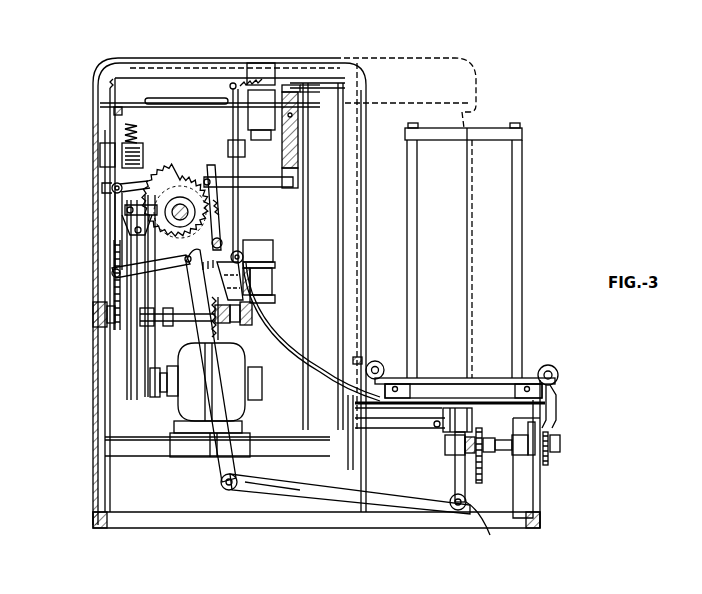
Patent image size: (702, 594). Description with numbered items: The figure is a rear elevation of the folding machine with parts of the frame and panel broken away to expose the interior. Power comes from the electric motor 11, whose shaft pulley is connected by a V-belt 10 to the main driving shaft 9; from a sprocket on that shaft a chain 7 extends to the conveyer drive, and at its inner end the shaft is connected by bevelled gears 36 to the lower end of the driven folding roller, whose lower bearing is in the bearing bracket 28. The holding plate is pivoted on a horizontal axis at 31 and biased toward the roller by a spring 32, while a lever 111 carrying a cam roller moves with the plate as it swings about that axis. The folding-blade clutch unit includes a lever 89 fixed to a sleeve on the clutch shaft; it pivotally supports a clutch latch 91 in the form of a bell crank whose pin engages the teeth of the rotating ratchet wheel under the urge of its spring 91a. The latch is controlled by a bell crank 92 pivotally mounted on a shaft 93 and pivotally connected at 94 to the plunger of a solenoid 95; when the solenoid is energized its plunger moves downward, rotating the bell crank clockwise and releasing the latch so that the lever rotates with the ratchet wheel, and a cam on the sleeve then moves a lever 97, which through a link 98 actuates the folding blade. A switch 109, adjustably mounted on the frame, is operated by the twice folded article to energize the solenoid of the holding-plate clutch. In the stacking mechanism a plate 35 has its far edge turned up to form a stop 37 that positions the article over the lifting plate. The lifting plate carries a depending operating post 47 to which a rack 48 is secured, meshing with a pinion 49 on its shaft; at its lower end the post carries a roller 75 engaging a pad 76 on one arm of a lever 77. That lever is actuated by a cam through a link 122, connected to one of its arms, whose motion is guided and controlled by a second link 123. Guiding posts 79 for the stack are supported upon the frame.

The chain 7 is at (95, 318).
The main driving shaft 9 is at (172, 322).
The V-belt 10 is at (150, 384).
The electric motor 11 is at (120, 208).
The bearing bracket 28 is at (272, 283).
The pivotal axis 31 is at (243, 257).
The spring 32 is at (245, 68).
The plate 35 is at (316, 378).
The bevelled gears 36 is at (254, 315).
The stop 37 is at (545, 400).
The operating post 47 is at (455, 485).
The rack 48 is at (480, 478).
The pinion 49 is at (480, 450).
The roller 75 is at (484, 530).
The pad 76 is at (455, 512).
The lever 77 is at (396, 512).
The guiding posts 79 is at (514, 301).
The lever 89 is at (175, 188).
The clutch latch 91 is at (117, 233).
The spring 91a is at (89, 285).
The bell crank 92 is at (119, 206).
The shaft 93 is at (112, 189).
The pivotal connection 94 is at (104, 160).
The solenoid 95 is at (140, 146).
The lever 97 is at (217, 226).
The link 98 is at (214, 178).
The switch 109 is at (236, 140).
The lever 111 is at (220, 245).
The link 122 is at (215, 405).
The second link 123 is at (176, 266).